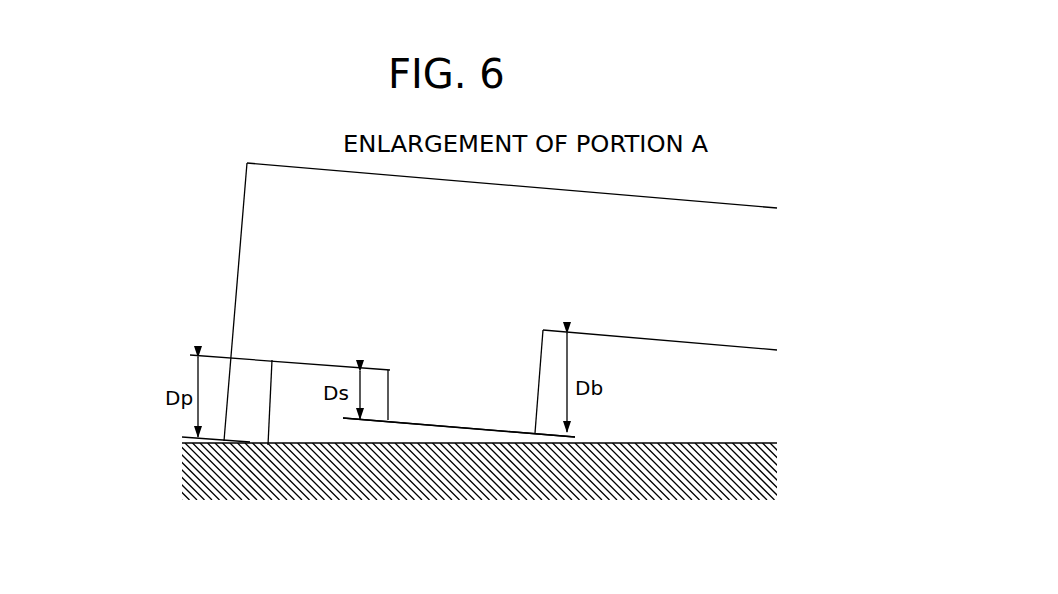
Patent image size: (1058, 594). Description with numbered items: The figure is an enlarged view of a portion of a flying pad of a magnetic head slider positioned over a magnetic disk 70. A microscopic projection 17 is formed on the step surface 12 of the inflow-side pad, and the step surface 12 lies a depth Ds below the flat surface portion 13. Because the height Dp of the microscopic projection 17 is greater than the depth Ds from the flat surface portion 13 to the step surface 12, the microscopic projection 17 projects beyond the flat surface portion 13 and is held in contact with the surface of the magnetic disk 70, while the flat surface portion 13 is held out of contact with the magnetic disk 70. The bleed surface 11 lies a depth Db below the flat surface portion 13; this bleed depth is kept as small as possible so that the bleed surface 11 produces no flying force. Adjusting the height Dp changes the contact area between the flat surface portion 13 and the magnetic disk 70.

The bleed surface 11 is at (667, 342).
The step surface 12 is at (298, 357).
The flat surface portion 13 is at (448, 413).
The microscopic projection 17 is at (250, 433).
The magnetic disk 70 is at (190, 472).